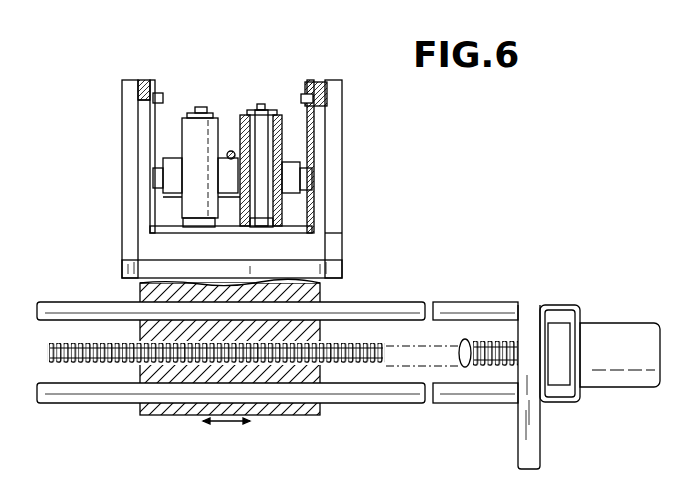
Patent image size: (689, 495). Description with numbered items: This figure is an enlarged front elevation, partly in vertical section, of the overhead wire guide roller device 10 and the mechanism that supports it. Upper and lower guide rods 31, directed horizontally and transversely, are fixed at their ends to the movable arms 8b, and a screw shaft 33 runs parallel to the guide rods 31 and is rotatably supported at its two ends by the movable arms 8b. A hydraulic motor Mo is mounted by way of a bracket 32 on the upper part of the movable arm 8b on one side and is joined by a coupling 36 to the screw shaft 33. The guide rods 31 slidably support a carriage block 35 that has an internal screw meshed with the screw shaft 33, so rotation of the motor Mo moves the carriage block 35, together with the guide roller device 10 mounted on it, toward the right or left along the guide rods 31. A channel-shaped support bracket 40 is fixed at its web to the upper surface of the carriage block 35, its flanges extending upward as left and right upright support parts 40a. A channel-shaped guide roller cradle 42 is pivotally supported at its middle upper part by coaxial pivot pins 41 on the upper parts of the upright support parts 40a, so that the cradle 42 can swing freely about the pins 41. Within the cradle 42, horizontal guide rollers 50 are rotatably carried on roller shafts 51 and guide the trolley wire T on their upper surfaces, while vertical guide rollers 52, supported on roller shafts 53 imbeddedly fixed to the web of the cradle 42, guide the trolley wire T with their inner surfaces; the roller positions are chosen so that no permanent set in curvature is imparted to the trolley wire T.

The movable arm 8b is at (522, 420).
The overhead wire guide roller device 10 is at (247, 95).
The guide rod 31 is at (390, 305).
The bracket 32 is at (567, 403).
The screw shaft 33 is at (93, 365).
The carriage block 35 is at (287, 415).
The coupling 36 is at (556, 323).
The support bracket 40 is at (340, 212).
The upright support part 40a is at (128, 168).
The pivot pin 41 is at (158, 95).
The guide roller cradle 42 is at (150, 132).
The horizontal guide roller 50 is at (170, 203).
The roller shaft 51 is at (147, 180).
The vertical guide roller 52 is at (183, 215).
The roller shaft 53 is at (201, 107).
The trolley wire T is at (231, 150).
The hydraulic motor Mo is at (625, 323).